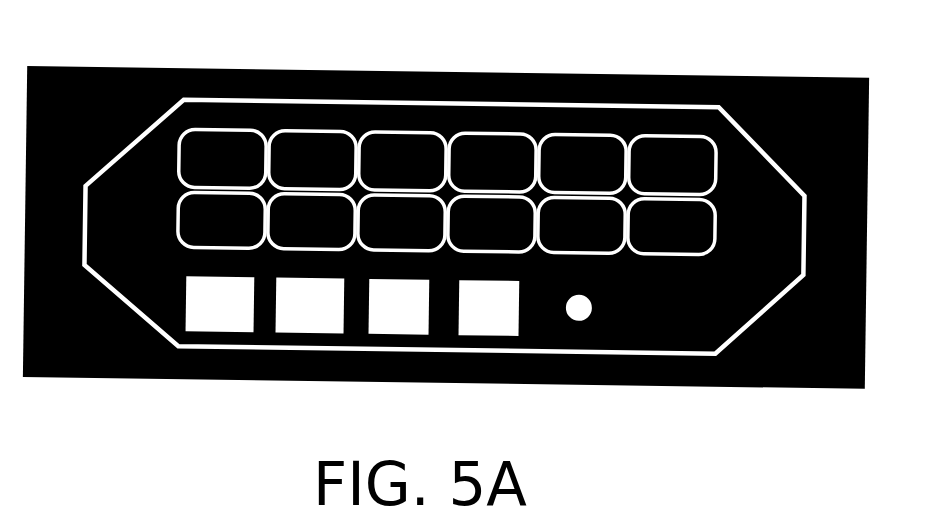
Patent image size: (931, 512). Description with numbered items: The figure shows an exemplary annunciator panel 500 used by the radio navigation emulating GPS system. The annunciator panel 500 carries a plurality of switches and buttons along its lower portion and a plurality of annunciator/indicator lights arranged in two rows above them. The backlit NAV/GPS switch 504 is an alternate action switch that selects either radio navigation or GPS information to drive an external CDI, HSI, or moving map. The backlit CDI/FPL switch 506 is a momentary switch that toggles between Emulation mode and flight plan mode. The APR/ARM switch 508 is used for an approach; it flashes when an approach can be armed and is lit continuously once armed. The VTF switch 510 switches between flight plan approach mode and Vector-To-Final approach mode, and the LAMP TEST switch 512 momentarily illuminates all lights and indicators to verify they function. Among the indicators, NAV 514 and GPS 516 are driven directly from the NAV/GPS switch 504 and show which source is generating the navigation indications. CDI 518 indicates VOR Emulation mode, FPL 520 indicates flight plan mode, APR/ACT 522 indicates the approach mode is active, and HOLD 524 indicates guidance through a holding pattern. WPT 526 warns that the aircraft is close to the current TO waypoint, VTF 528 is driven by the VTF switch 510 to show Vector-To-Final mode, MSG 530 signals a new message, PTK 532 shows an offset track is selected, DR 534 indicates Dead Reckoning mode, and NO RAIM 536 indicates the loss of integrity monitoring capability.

The annunciator panel 500 is at (490, 47).
The NAV/GPS switch 504 is at (209, 346).
The CDI/FPL switch 506 is at (304, 346).
The APR/ARM switch 508 is at (402, 346).
The VTF switch 510 is at (489, 346).
The LAMP TEST switch 512 is at (578, 346).
The NAV annunciator 514 is at (223, 158).
The GPS annunciator 516 is at (222, 220).
The CDI annunciator 518 is at (313, 159).
The FPL annunciator 520 is at (312, 221).
The APR/ACT annunciator 522 is at (403, 160).
The HOLD annunciator 524 is at (402, 223).
The WPT annunciator 526 is at (493, 162).
The VTF annunciator 528 is at (492, 224).
The MSG annunciator 530 is at (583, 163).
The PTK annunciator 532 is at (582, 225).
The DR annunciator 534 is at (672, 164).
The NO RAIM annunciator 536 is at (672, 225).